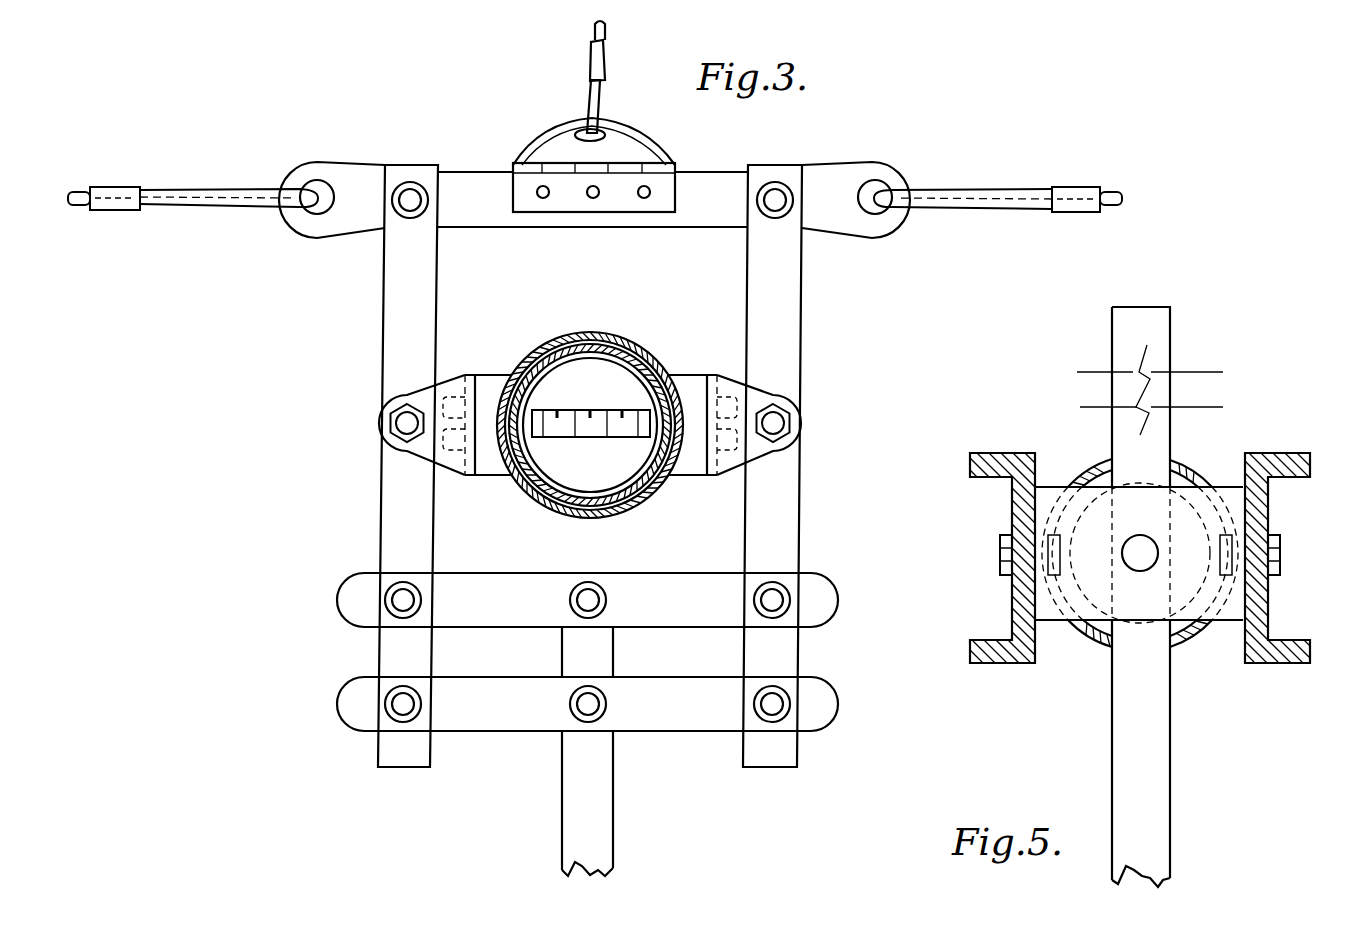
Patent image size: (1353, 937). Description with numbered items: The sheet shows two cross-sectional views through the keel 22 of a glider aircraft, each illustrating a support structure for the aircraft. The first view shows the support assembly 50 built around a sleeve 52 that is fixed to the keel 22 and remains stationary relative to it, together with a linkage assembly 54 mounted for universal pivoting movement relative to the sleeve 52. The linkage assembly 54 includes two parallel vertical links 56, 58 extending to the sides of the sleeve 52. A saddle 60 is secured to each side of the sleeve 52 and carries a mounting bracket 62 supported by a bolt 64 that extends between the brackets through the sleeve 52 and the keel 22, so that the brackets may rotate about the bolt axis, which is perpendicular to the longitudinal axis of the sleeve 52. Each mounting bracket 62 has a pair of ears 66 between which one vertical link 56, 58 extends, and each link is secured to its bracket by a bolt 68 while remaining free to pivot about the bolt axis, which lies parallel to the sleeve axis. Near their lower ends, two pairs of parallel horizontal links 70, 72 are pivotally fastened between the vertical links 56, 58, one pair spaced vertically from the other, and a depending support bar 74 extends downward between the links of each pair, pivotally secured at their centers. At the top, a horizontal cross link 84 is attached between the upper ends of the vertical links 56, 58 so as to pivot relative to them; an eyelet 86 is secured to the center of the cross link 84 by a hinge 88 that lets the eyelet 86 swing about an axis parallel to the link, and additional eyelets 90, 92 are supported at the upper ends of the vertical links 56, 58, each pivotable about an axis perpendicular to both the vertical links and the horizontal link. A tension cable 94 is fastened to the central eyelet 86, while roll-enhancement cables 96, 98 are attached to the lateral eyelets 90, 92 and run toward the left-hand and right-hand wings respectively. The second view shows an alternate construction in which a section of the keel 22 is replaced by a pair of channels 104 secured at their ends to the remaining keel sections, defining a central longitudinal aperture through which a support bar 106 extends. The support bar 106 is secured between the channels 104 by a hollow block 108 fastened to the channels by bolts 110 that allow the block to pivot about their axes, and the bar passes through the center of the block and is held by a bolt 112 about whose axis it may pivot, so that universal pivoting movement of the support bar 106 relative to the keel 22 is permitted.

In FIG. 3, the keel 22 is at (602, 362).
In FIG. 5, the keel 22 is at (1206, 650).
In FIG. 3, the clamp assembly 50 is at (633, 350).
In FIG. 3, the sleeve 52 is at (540, 345).
In FIG. 3, the linkage assembly 54 is at (587, 433).
In FIG. 3, the vertical link 56 is at (392, 323).
In FIG. 3, the vertical link 58 is at (780, 283).
In FIG. 3, the saddle 60 is at (488, 472).
In FIG. 3, the mounting bracket 62 is at (447, 378).
In FIG. 3, the bolt 64 is at (557, 435).
In FIG. 3, the ears 66 is at (380, 424).
In FIG. 3, the bolt 68 is at (404, 430).
In FIG. 3, the horizontal links 70 is at (503, 580).
In FIG. 3, the horizontal links 72 is at (523, 693).
In FIG. 3, the depending support bar 74 is at (593, 842).
In FIG. 3, the horizontal cross link 84 is at (572, 220).
In FIG. 3, the eyelet 86 is at (612, 137).
In FIG. 3, the hinge 88 is at (513, 170).
In FIG. 3, the eyelet 90 is at (338, 170).
In FIG. 3, the eyelet 92 is at (905, 150).
In FIG. 3, the tension cable 94 is at (603, 35).
In FIG. 3, the roll-enhancement cable 96 is at (77, 190).
In FIG. 3, the roll-enhancement cable 98 is at (1112, 190).
In FIG. 5, the channels 104 is at (1008, 453).
In FIG. 5, the support bar 106 is at (1160, 827).
In FIG. 5, the hollow block 108 is at (1087, 640).
In FIG. 5, the bolts 110 is at (1002, 552).
In FIG. 5, the bolt 112 is at (1137, 567).